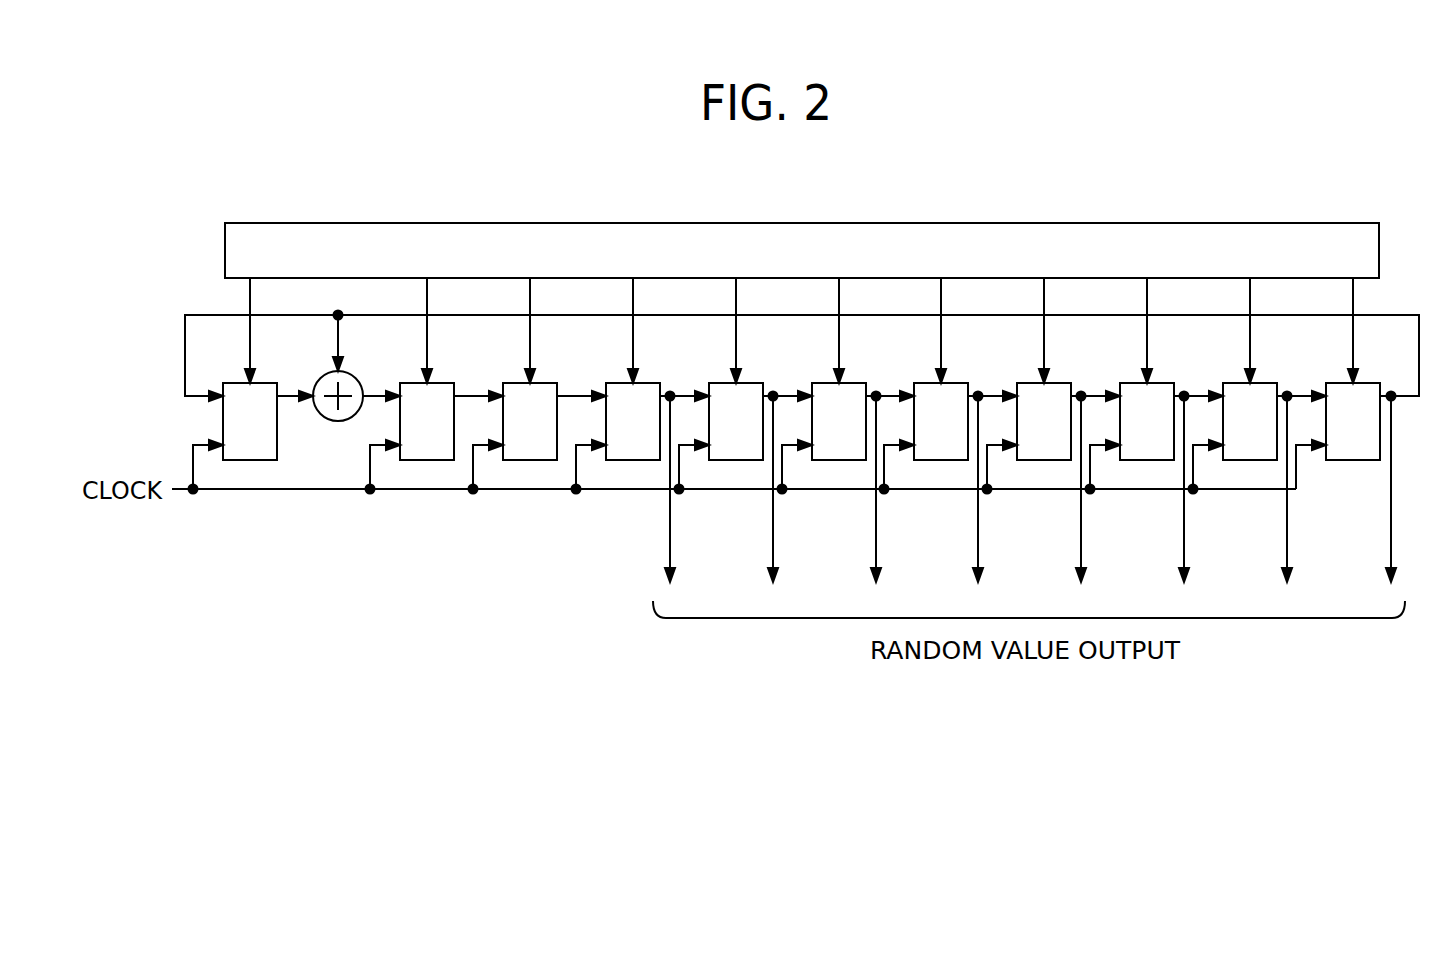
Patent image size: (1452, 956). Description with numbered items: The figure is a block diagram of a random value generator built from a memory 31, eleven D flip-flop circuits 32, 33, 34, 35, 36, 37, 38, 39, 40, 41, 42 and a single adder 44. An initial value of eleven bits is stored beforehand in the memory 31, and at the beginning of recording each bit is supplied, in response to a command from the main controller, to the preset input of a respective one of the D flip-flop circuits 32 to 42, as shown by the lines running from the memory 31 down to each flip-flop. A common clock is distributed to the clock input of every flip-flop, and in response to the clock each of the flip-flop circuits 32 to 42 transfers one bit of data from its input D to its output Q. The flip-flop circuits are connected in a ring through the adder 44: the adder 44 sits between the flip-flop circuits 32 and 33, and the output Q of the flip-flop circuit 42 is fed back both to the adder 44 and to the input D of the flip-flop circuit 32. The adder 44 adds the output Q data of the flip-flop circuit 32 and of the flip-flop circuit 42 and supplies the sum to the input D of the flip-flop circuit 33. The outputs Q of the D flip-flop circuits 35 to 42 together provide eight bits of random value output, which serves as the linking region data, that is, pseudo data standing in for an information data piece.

The memory 31 is at (1251, 223).
The D flip-flop circuit 32 is at (238, 383).
The D flip-flop circuit 33 is at (415, 383).
The D flip-flop circuit 34 is at (518, 383).
The D flip-flop circuit 35 is at (621, 383).
The D flip-flop circuit 36 is at (724, 383).
The D flip-flop circuit 37 is at (827, 383).
The D flip-flop circuit 38 is at (929, 383).
The D flip-flop circuit 39 is at (1032, 383).
The D flip-flop circuit 40 is at (1135, 383).
The D flip-flop circuit 41 is at (1238, 383).
The D flip-flop circuit 42 is at (1341, 383).
The adder 44 is at (320, 379).